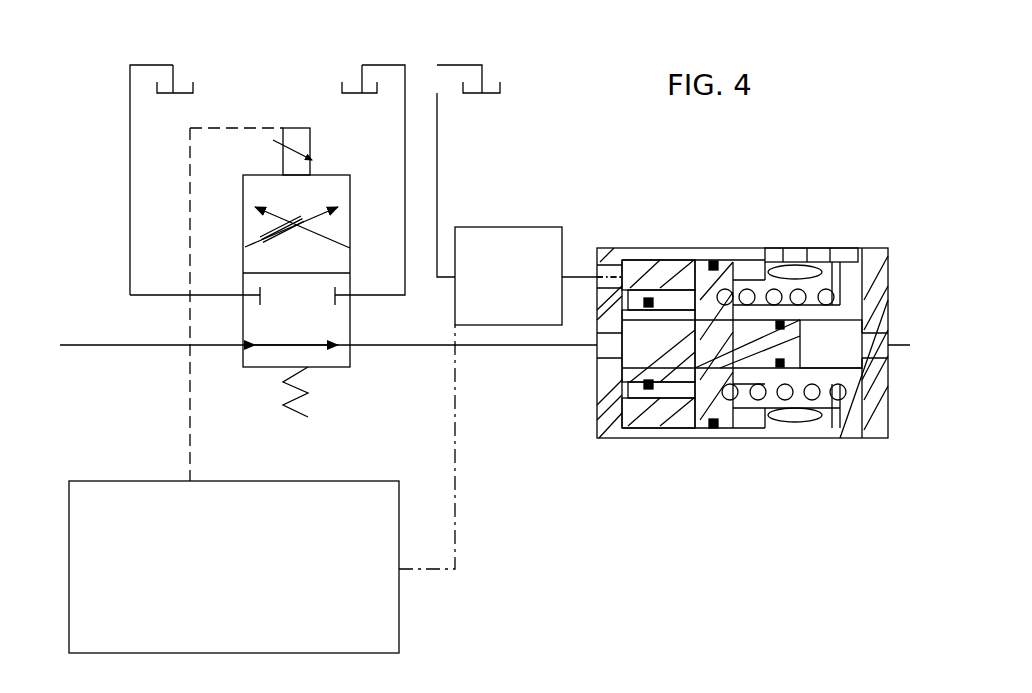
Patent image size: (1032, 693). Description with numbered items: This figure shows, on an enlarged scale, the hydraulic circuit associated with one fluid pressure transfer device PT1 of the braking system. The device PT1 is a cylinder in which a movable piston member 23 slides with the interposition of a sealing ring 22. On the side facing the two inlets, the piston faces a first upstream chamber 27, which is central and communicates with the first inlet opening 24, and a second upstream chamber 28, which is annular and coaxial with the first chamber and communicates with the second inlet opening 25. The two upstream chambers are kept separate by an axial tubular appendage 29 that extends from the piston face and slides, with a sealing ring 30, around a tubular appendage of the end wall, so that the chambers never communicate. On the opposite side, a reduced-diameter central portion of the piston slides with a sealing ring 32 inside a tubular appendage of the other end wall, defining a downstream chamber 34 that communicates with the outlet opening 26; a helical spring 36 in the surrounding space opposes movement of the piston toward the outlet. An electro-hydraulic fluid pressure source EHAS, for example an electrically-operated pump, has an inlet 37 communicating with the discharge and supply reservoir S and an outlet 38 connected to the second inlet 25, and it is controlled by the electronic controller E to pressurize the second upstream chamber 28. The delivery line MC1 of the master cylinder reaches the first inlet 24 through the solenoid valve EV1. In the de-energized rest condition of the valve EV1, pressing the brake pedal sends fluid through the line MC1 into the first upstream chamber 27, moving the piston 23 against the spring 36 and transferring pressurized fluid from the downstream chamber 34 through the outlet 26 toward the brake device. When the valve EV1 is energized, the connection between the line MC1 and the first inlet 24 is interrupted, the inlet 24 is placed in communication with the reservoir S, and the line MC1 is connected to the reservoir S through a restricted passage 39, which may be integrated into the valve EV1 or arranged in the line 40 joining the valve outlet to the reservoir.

The sealing ring 22 is at (718, 247).
The movable piston member 23 is at (712, 400).
The first inlet opening 24 is at (597, 352).
The second inlet opening 25 is at (597, 278).
The outlet opening 26 is at (875, 343).
The first upstream chamber 27 is at (635, 369).
The second upstream chamber 28 is at (670, 416).
The axial tubular appendage 29 is at (637, 398).
The sealing ring 30 is at (648, 297).
The sealing ring 32 is at (778, 344).
The downstream chamber 34 is at (847, 358).
The helical spring 36 is at (735, 262).
The inlet 37 is at (450, 277).
The outlet 38 is at (563, 274).
The restricted passage 39 is at (280, 237).
The line 40 is at (405, 162).
The discharge and supply reservoir S is at (183, 82).
The solenoid valve EV1 is at (270, 304).
The delivery line MC1 is at (122, 348).
The electro-hydraulic actuation system fluid pressure source EHAS is at (521, 221).
The electronic controller E is at (399, 620).
The fluid pressure transfer device PT1 is at (726, 314).